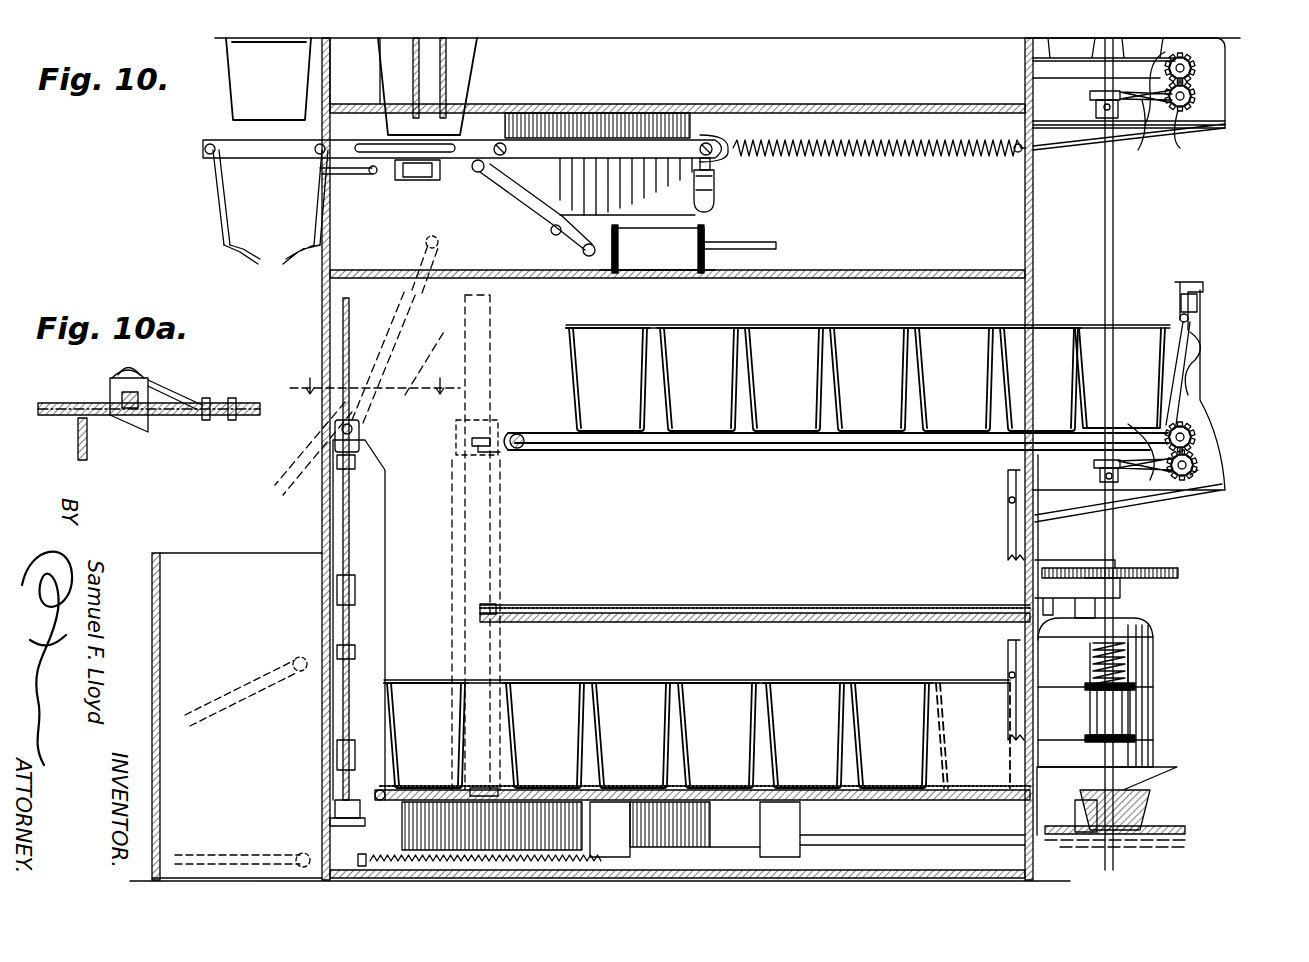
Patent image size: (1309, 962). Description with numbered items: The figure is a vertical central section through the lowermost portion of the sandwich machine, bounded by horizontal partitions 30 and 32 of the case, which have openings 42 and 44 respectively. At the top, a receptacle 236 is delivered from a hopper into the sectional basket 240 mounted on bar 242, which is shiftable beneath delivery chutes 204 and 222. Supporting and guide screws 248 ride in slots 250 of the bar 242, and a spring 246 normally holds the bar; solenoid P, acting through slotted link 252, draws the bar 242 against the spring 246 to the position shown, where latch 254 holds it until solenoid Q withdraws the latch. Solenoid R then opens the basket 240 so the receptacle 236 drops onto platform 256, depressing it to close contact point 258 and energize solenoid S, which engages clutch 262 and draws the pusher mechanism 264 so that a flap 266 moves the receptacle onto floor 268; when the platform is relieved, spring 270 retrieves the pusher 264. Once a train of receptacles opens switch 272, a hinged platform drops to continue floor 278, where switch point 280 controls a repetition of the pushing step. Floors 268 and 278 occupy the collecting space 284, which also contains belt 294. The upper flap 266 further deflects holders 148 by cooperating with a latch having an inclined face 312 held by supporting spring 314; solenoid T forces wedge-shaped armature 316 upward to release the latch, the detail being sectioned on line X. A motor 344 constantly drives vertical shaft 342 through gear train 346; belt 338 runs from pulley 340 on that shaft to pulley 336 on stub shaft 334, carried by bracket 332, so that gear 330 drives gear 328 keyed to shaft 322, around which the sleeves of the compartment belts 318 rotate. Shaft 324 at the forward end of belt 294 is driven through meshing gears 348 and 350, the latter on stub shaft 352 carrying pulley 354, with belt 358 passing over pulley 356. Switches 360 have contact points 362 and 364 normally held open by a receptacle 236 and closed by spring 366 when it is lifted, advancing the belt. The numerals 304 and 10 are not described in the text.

In FIG. 10, the horizontal partition 30 is at (946, 104).
In FIG. 10, the endless belt 318 is at (1028, 80).
In FIG. 10, the opening 42 is at (460, 105).
In FIG. 10, the opening 44 is at (470, 272).
In FIG. 10, the horizontal partition 32 is at (968, 271).
In FIG. 10, the holder 148 is at (410, 300).
In FIG. 10, the receptacle 236 is at (245, 99).
In FIG. 10, the delivery chute 204 is at (432, 68).
In FIG. 10, the delivery chute 222 is at (380, 60).
In FIG. 10, the supporting and guide screw 248 is at (512, 142).
In FIG. 10, the slot 250 is at (596, 136).
In FIG. 10, the spring 246 is at (822, 145).
In FIG. 10, the bar 242 is at (217, 165).
In FIG. 10, the sectional basket 240 is at (228, 250).
In FIG. 10, the solenoid R is at (412, 180).
In FIG. 10, the slotted link 252 is at (526, 200).
In FIG. 10, the latch 254 is at (712, 165).
In FIG. 10, the solenoid Q is at (715, 186).
In FIG. 10, the solenoid P is at (688, 249).
In FIG. 10, the vertical shaft 342 is at (1105, 243).
In FIG. 10, the bracket 332 is at (1215, 118).
In FIG. 10, the stub shaft 334 is at (1210, 132).
In FIG. 10, the shaft 322 is at (1196, 67).
In FIG. 10, the gear 330 is at (1196, 98).
In FIG. 10, the gear 328 is at (1198, 83).
In FIG. 10, the pulley 340 is at (1090, 94).
In FIG. 10, the belt 338 is at (1138, 150).
In FIG. 10, the pulley 336 is at (1180, 148).
In FIG. 10, the pulley 354 is at (1215, 492).
In FIG. 10, the contact point 362 is at (1188, 291).
In FIG. 10, the contact point 364 is at (1200, 296).
In FIG. 10, the switch 360 is at (1192, 346).
In FIG. 10, the spring 366 is at (1194, 375).
In FIG. 10, the shaft 324 is at (1196, 437).
In FIG. 10, the gear 350 is at (1198, 463).
In FIG. 10, the gear 348 is at (1196, 446).
In FIG. 10, the stub shaft 352 is at (1198, 470).
In FIG. 10, the pulley 356 is at (1094, 466).
In FIG. 10, the belt 358 is at (1140, 426).
In FIG. 10, the gear train 346 is at (1132, 572).
In FIG. 10, the motor 344 is at (1142, 620).
In FIG. 10, the solenoid S is at (1130, 712).
In FIG. 10, the clutch 262 is at (1150, 805).
In FIG. 10, the switch 272 is at (1010, 496).
In FIG. 10, the collecting space 284 is at (882, 524).
In FIG. 10, the belt 294 is at (686, 452).
In FIG. 10, the floor 278 is at (702, 615).
In FIG. 10, the floor 268 is at (845, 612).
In FIG. 10, the platform 256 is at (406, 789).
In FIG. 10, the contact point 258 is at (492, 790).
In FIG. 10, the spring 270 is at (505, 858).
In FIG. 10, the flap 266 is at (343, 318).
In FIG. 10A, the flap 266 is at (78, 436).
In FIG. 10, the block 304 is at (359, 432).
In FIG. 10, the pusher mechanism 264 is at (335, 806).
In FIG. 10, the section line X is at (376, 389).
In FIG. 10, the switch point 280 is at (480, 437).
In FIG. 10A, the base bar 10 is at (66, 403).
In FIG. 10A, the inclined face 312 is at (128, 430).
In FIG. 10A, the wedge-shaped armature 316 is at (120, 400).
In FIG. 10A, the supporting spring 314 is at (186, 392).
In FIG. 10A, the solenoid T is at (130, 372).